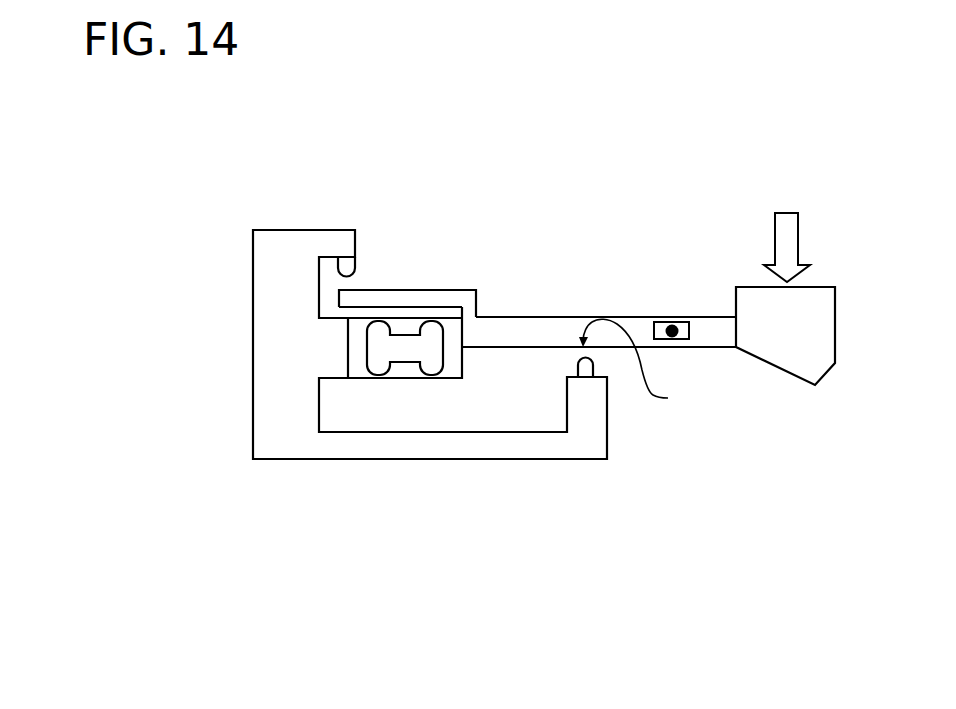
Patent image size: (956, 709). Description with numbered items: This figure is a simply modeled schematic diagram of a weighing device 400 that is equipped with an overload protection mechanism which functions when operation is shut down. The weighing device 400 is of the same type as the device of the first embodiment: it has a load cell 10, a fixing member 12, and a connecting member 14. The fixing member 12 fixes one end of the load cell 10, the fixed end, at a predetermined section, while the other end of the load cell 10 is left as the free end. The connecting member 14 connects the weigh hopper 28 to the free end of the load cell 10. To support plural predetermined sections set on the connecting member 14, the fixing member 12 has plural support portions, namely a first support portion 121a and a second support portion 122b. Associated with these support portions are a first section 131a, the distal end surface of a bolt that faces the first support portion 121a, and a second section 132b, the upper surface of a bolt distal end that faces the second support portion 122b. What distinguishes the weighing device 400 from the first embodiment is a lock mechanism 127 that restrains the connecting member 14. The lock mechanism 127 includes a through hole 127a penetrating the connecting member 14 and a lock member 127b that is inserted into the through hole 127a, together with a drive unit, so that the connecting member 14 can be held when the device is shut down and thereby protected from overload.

The load cell 10 is at (358, 373).
The fixing member 12 is at (277, 245).
The connecting member 14 is at (518, 330).
The weigh hopper 28 is at (790, 353).
The first support portion 121a is at (588, 365).
The second support portion 122b is at (349, 268).
The lock mechanism 127 is at (741, 230).
The through hole 127a is at (657, 322).
The lock member 127b is at (677, 325).
The first section 131a is at (655, 366).
The second section 132b is at (349, 289).
The weighing device 400 is at (596, 185).